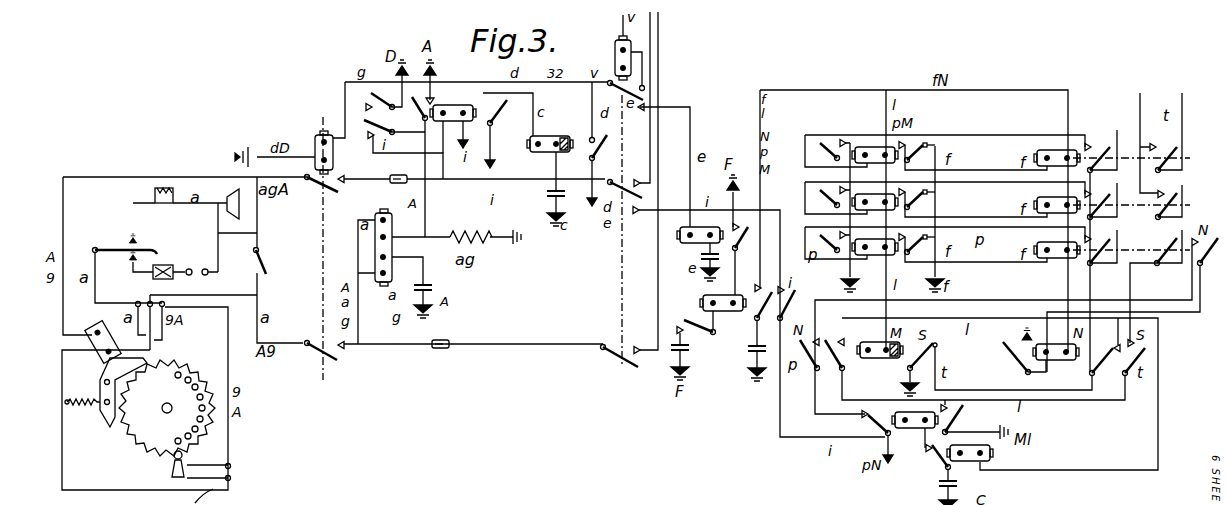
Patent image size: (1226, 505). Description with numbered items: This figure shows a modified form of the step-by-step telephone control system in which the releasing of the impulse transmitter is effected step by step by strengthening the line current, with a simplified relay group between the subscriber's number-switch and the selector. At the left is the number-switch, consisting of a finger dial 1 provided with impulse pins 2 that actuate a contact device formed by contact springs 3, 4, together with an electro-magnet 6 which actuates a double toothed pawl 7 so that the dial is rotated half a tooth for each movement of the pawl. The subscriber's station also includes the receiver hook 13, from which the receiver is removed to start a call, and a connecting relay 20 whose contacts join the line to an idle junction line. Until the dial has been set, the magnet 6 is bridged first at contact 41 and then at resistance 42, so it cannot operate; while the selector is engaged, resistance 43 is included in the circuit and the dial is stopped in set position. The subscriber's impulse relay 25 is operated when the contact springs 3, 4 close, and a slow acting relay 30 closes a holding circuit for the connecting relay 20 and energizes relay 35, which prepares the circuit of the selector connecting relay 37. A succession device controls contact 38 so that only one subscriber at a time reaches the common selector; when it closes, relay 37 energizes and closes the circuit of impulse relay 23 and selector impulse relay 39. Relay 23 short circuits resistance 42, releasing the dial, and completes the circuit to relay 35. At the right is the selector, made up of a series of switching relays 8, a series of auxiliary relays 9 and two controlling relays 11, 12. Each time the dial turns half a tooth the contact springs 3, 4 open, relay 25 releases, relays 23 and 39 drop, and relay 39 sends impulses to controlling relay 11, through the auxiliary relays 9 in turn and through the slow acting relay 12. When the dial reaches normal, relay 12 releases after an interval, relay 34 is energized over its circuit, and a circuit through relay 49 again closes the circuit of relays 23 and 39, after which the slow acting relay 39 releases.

The finger dial 1 is at (125, 426).
The impulse pins 2 is at (185, 368).
The contact spring 3 is at (200, 465).
The contact spring 4 is at (204, 497).
The electro-magnet 6 is at (103, 335).
The double toothed pawl 7 is at (100, 380).
The switching relays 8 is at (1053, 264).
The auxiliary relays 9 is at (875, 262).
The controlling relay 11 is at (1054, 361).
The controlling relay 12 is at (868, 358).
The hook 13 is at (118, 248).
The connecting relay 20 is at (333, 157).
The impulse relay 23 is at (453, 105).
The subscriber's impulse relay 25 is at (375, 250).
The slow acting relay 30 is at (550, 181).
The relay 34 is at (615, 54).
The relay 35 is at (693, 243).
The selector connecting relay 37 is at (722, 312).
The contact of succession device 38 is at (695, 338).
The impulse relay 39 is at (920, 430).
The contact 41 is at (168, 341).
The resistance 42 is at (268, 270).
The resistance 43 is at (471, 229).
The relay 49 is at (983, 464).